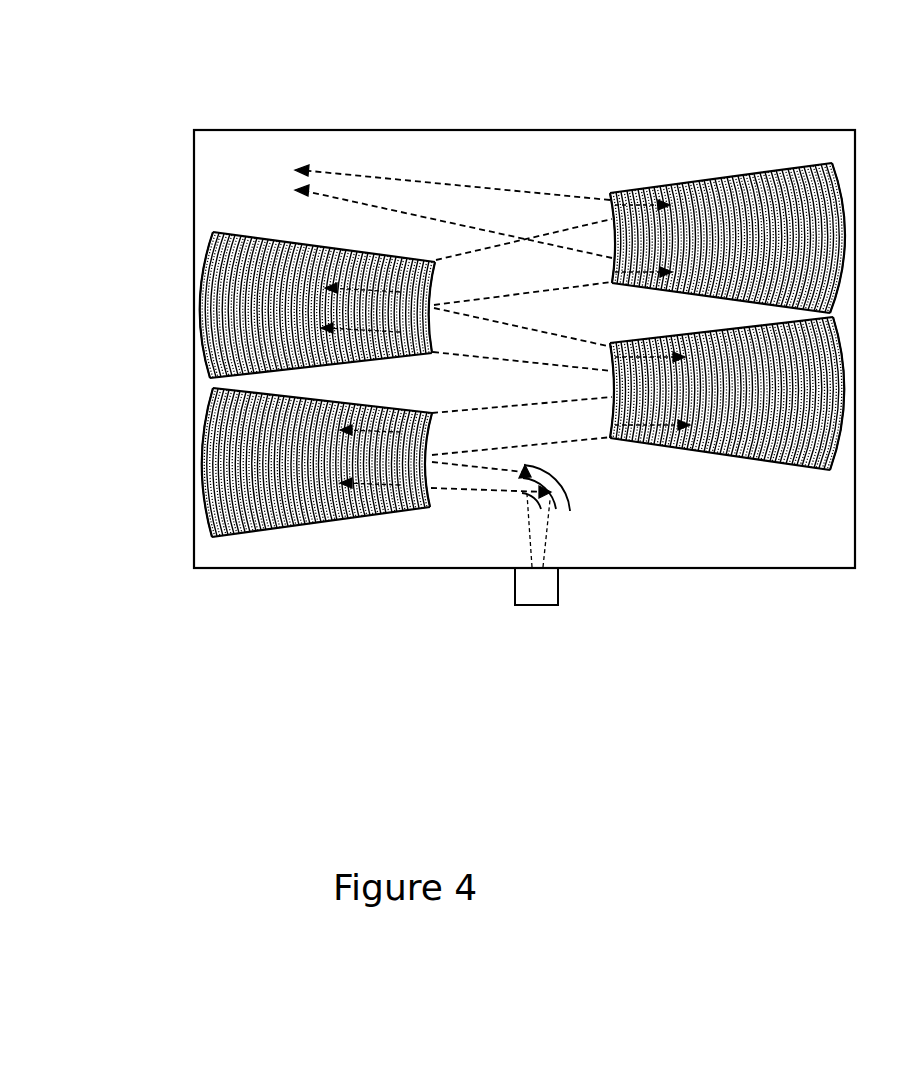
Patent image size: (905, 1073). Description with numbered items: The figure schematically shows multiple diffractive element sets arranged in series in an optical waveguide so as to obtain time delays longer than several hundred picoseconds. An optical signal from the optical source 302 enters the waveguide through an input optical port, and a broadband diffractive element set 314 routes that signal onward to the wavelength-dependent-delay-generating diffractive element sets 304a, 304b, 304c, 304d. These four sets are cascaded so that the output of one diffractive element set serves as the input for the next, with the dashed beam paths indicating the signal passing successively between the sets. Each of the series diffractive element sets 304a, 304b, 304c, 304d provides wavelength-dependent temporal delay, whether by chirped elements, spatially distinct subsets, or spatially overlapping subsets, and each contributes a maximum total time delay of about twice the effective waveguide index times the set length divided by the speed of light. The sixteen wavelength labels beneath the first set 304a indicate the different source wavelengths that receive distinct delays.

The wavelength-dependent-delay-generating diffractive element set 304a is at (245, 485).
The wavelength-dependent-delay-generating diffractive element set 304b is at (780, 460).
The wavelength-dependent-delay-generating diffractive element set 304c is at (258, 303).
The wavelength-dependent-delay-generating diffractive element set 304d is at (713, 185).
The broadband diffractive element set 314 is at (548, 492).
The optical source 302 is at (536, 587).